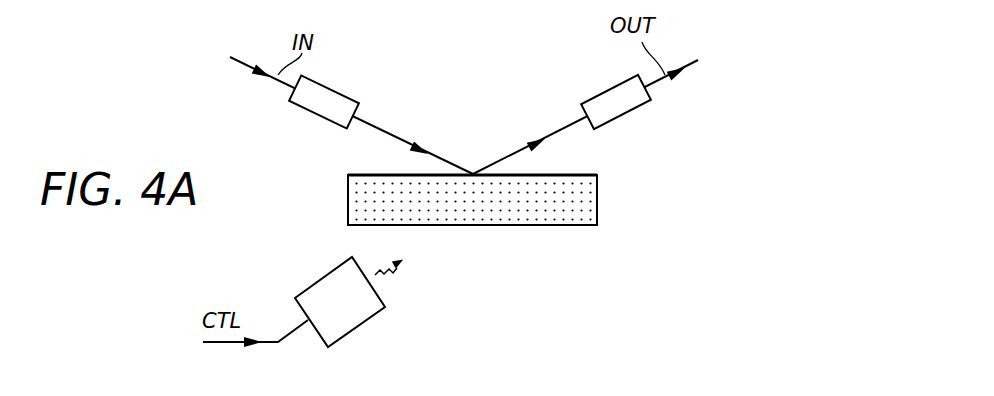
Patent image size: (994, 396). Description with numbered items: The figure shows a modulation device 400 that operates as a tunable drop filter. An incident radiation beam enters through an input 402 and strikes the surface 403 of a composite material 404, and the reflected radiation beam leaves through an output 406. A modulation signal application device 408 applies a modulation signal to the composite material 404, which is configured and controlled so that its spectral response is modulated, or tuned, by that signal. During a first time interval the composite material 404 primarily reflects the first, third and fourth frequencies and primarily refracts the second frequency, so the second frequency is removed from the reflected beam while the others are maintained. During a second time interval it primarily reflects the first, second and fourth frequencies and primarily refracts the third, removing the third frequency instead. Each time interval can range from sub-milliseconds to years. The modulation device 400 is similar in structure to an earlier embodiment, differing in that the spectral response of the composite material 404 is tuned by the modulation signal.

The modulation device 400 is at (460, 63).
The input 402 is at (333, 90).
The surface 403 is at (572, 175).
The composite material 404 is at (597, 202).
The output 406 is at (593, 95).
The modulation signal application device 408 is at (318, 280).